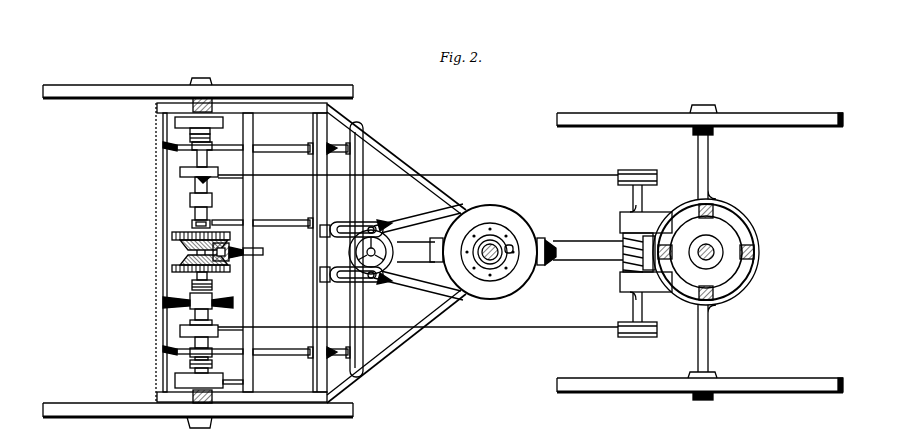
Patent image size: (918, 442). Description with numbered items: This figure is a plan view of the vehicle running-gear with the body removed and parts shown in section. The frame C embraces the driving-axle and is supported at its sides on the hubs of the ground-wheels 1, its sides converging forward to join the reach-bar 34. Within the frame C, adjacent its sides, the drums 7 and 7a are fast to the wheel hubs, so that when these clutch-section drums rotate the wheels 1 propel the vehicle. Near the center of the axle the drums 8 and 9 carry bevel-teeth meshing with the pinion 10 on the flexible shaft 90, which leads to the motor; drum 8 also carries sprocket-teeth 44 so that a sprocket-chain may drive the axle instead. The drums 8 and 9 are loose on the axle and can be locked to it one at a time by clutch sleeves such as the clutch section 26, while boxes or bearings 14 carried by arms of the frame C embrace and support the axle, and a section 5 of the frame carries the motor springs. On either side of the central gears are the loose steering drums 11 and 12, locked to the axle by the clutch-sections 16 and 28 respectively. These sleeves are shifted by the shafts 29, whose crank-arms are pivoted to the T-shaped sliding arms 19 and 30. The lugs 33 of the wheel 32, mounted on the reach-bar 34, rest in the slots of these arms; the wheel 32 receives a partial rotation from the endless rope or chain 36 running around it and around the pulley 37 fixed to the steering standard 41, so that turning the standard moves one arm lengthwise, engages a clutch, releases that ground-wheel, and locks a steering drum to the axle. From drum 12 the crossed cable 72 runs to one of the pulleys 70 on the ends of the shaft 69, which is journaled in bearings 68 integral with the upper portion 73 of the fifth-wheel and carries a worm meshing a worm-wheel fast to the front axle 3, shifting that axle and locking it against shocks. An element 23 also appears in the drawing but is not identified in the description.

The wheels 1 is at (290, 95).
The front axle 3 is at (709, 183).
The frame section 5 is at (250, 311).
The drum 7 is at (175, 120).
The drum 7a is at (243, 382).
The drum 8 is at (172, 236).
The drum 9 is at (192, 284).
The pinion 10 is at (232, 258).
The drum 11 is at (218, 178).
The drum 12 is at (218, 332).
The box or bearing 14 is at (190, 201).
The clutch-section 16 is at (208, 158).
The sliding arm 19 is at (363, 206).
The cross rod 23 is at (284, 222).
The clutch section 26 is at (198, 292).
The clutch-section 28 is at (212, 363).
The shaft 29 is at (285, 146).
The sliding arm 30 is at (363, 314).
The wheel 32 is at (393, 266).
The lugs 33 is at (375, 223).
The reach-bar 34 is at (582, 261).
The endless rope or chain 36 is at (462, 203).
The pulley 37 is at (540, 243).
The standard 41 is at (496, 246).
The sprocket-teeth 44 is at (172, 263).
The bearings 68 is at (646, 252).
The shaft 69 is at (633, 196).
The pulleys 70 is at (657, 180).
The crossed cable 72 is at (510, 330).
The upper portion of fifth-wheel 73 is at (693, 224).
The shaft 90 is at (263, 251).
The frame C is at (418, 168).